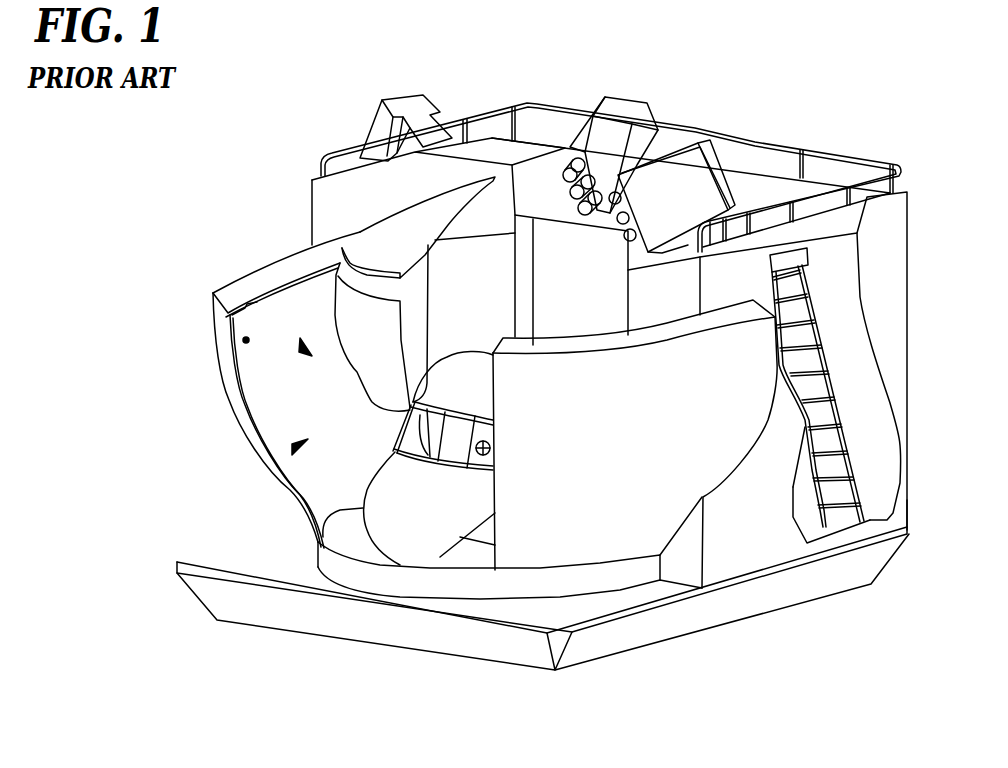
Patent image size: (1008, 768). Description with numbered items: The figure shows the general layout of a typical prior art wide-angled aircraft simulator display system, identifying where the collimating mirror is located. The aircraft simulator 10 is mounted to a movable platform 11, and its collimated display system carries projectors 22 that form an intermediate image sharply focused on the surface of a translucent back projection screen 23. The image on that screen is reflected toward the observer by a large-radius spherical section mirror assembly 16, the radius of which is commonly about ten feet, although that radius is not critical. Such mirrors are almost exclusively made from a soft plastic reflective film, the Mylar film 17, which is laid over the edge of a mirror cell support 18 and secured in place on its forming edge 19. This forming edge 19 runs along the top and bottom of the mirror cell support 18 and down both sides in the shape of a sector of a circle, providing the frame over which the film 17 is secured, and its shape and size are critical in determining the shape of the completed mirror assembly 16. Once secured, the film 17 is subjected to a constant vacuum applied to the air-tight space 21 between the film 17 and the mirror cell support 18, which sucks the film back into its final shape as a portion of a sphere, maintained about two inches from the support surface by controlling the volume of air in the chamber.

The aircraft simulator 10 is at (122, 172).
The movable platform 11 is at (607, 625).
The mirror assembly 16 is at (300, 445).
The Mylar film 17 is at (246, 340).
The mirror cell support 18 is at (213, 315).
The forming edge 19 is at (793, 423).
The air-tight space 21 is at (308, 345).
The projectors 22 is at (393, 98).
The back projection screen 23 is at (337, 317).